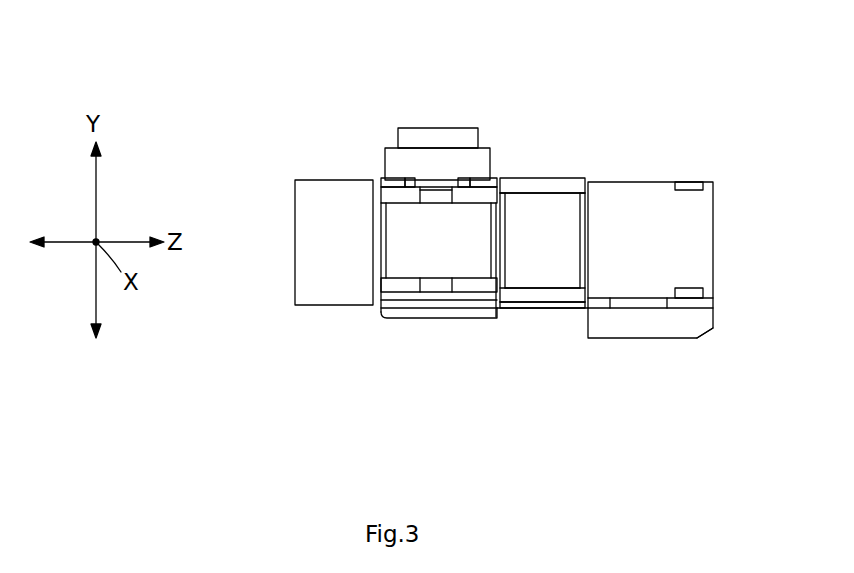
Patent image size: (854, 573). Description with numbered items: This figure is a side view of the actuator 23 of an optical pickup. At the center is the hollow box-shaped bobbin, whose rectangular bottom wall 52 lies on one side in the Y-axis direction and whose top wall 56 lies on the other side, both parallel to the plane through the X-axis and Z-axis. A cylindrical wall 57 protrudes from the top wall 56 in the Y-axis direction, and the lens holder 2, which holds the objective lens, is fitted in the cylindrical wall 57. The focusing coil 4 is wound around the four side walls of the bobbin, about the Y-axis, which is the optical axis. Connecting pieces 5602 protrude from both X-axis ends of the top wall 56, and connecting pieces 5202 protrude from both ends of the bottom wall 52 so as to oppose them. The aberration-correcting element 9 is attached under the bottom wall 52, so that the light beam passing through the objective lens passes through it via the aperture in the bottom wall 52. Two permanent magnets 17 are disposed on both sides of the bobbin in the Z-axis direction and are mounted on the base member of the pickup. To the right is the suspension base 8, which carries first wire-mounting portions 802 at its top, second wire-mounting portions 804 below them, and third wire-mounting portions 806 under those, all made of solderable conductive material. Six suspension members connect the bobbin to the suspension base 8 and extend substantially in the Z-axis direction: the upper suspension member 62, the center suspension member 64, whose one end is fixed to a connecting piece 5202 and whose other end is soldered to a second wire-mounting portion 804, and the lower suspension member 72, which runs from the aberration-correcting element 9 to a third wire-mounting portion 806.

The actuator 23 is at (595, 72).
The lens holder 2 is at (460, 137).
The focusing coil 4 is at (408, 251).
The suspension base 8 is at (720, 263).
The aberration-correcting element 9 is at (468, 324).
The permanent magnet 17 is at (308, 218).
The bottom wall 52 is at (378, 322).
The connecting piece 5202 is at (435, 284).
The top wall 56 is at (388, 170).
The connecting piece 5602 is at (433, 195).
The cylindrical wall 57 is at (396, 177).
The suspension member 62 is at (562, 192).
The suspension member 64 is at (546, 290).
The suspension member 72 is at (570, 310).
The first wire-mounting portion 802 is at (716, 200).
The second wire-mounting portion 804 is at (716, 292).
The third wire-mounting portion 806 is at (706, 333).